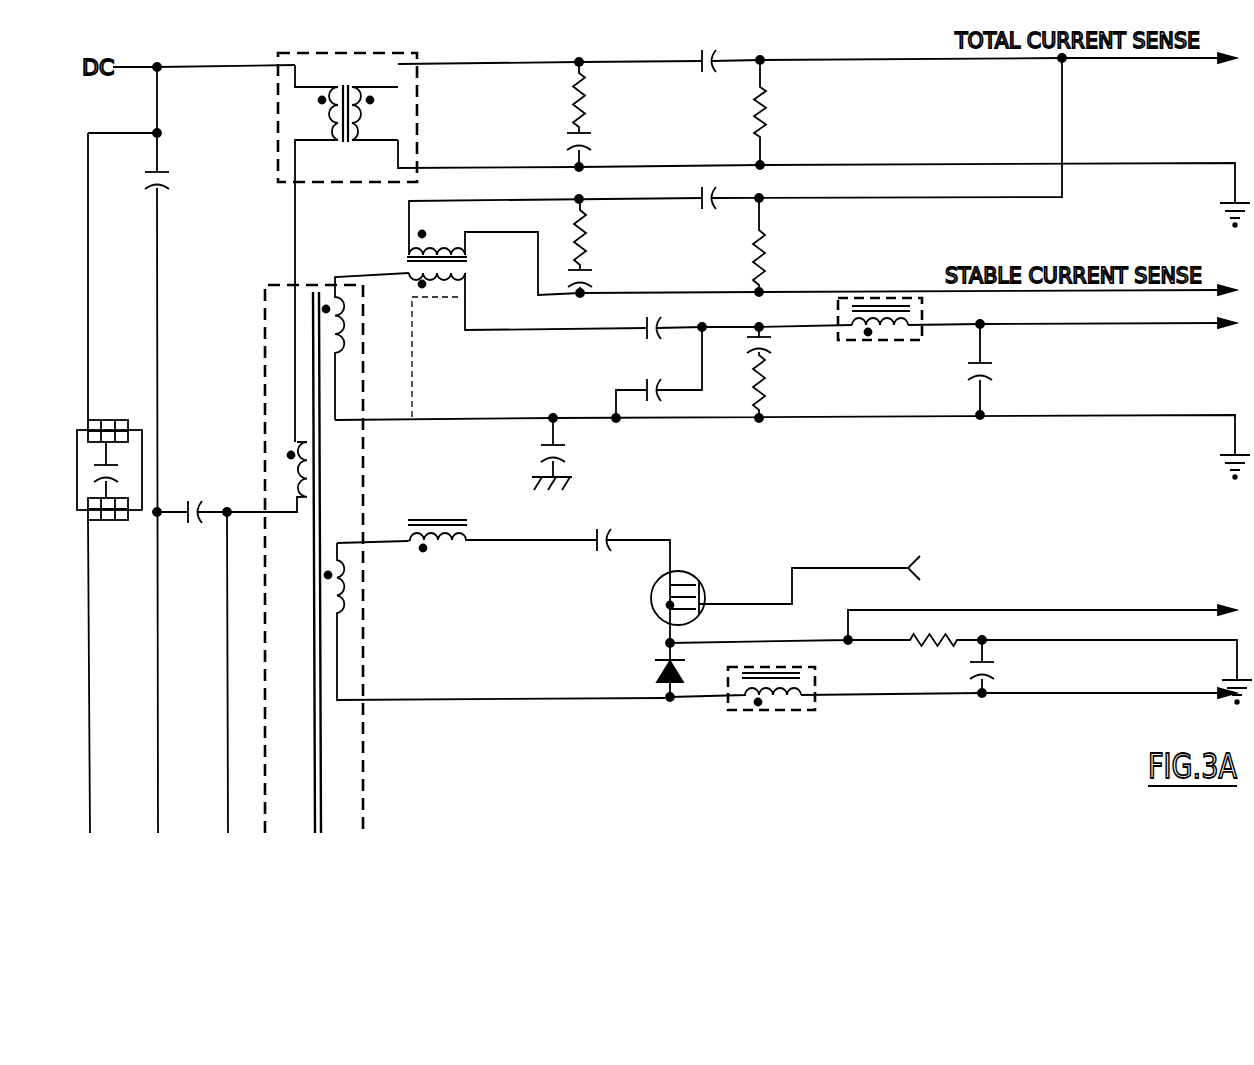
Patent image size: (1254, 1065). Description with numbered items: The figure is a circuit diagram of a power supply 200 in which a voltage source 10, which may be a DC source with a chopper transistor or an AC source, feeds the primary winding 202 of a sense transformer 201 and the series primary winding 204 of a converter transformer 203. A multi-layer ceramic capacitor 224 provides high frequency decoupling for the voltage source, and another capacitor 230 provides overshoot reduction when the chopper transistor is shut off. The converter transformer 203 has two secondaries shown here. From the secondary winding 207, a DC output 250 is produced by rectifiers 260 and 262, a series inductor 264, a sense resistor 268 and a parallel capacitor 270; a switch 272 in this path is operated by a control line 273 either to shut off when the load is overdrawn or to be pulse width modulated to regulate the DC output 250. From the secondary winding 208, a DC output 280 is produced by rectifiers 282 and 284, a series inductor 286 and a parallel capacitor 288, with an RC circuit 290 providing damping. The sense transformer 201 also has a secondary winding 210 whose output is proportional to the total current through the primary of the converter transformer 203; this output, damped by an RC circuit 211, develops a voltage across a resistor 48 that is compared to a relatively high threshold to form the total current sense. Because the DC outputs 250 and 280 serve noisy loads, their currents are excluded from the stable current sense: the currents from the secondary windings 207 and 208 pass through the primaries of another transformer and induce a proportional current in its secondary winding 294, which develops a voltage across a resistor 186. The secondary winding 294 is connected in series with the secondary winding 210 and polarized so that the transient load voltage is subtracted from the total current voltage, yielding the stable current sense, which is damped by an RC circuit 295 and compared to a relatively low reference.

The voltage source 10 is at (134, 60).
The resistor 48 is at (773, 114).
The resistor 186 is at (776, 257).
The power supply 200 is at (662, 55).
The sense transformer 201 is at (363, 233).
The primary winding 202 is at (311, 142).
The converter transformer 203 is at (435, 545).
The series primary winding 204 is at (301, 499).
The secondary winding 207 is at (350, 597).
The secondary winding 208 is at (346, 345).
The secondary winding 210 is at (357, 120).
The RC circuit 211 is at (593, 124).
The multi-layer ceramic capacitor 224 is at (132, 414).
The capacitor 230 is at (190, 500).
The DC output 250 is at (1173, 690).
The rectifier 260 is at (593, 534).
The rectifier 262 is at (656, 672).
The series inductor 264 is at (771, 672).
The sense resistor 268 is at (946, 646).
The parallel capacitor 270 is at (995, 672).
The switch 272 is at (652, 598).
The control line 273 is at (833, 568).
The DC output 280 is at (1218, 331).
The rectifier 282 is at (644, 335).
The rectifier 284 is at (644, 385).
The series inductor 286 is at (873, 341).
The parallel capacitor 288 is at (996, 373).
The RC circuit 290 is at (782, 388).
The secondary winding 294 is at (432, 243).
The RC circuit 295 is at (601, 257).